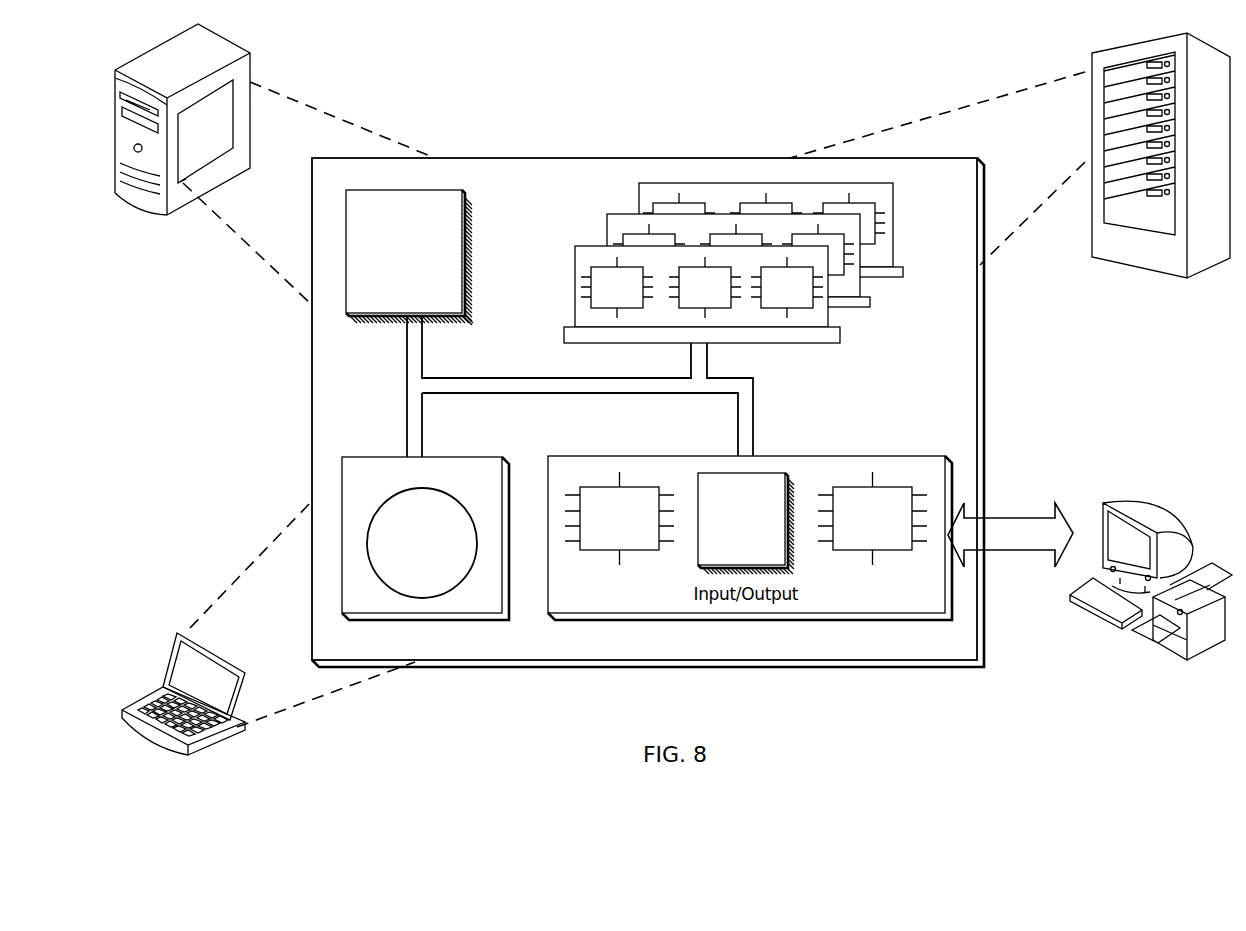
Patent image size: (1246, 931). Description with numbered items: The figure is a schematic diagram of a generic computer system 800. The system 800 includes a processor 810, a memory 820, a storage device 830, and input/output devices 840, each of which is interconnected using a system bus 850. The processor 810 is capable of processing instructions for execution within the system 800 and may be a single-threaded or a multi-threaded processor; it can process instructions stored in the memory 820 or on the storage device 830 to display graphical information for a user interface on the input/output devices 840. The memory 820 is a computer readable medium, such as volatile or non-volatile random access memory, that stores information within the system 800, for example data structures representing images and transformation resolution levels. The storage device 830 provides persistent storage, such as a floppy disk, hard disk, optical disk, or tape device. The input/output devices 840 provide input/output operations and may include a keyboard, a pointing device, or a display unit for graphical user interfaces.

The generic computer system 800 is at (484, 49).
The processor 810 is at (409, 257).
The memory 820 is at (898, 311).
The storage device 830 is at (425, 538).
The input/output devices 840 is at (1103, 508).
The system bus 850 is at (580, 393).